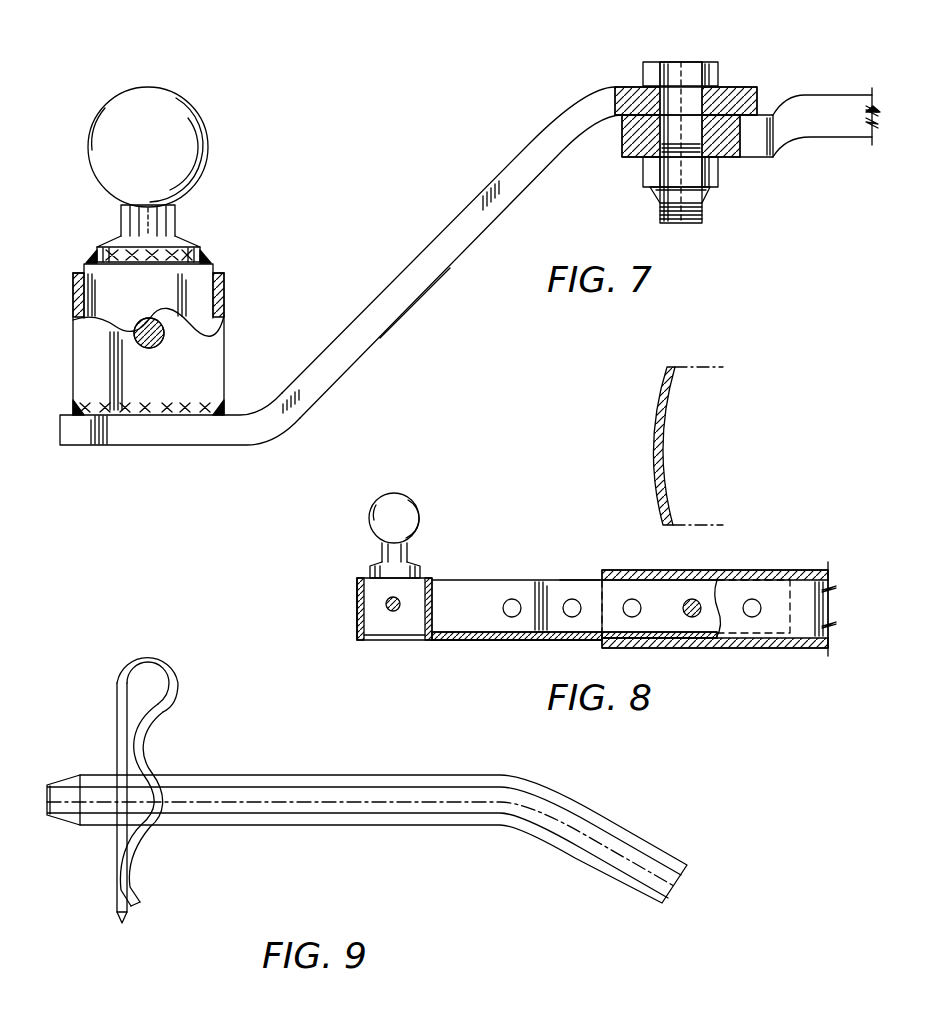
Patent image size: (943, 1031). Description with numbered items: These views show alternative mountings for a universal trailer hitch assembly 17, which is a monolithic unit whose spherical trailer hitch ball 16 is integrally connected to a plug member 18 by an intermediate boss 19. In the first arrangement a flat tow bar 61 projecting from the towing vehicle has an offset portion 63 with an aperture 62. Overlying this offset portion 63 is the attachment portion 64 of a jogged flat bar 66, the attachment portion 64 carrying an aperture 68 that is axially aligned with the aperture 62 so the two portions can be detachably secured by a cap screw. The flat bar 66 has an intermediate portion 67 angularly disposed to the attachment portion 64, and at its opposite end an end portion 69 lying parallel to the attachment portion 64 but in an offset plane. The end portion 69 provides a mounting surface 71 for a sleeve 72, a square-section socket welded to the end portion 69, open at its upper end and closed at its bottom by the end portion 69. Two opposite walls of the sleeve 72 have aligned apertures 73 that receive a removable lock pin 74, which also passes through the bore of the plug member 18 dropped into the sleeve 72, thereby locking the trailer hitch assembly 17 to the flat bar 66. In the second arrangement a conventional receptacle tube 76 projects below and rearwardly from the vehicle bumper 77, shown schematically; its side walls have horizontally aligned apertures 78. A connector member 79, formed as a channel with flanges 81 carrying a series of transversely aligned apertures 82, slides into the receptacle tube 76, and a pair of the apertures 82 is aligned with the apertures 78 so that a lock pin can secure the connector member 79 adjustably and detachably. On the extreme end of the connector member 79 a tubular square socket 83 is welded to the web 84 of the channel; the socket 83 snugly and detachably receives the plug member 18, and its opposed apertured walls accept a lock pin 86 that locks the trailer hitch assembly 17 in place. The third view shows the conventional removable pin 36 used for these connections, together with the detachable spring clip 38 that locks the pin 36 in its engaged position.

In FIG. 7, the trailer hitch ball 16 is at (190, 130).
In FIG. 8, the trailer hitch ball 16 is at (410, 510).
In FIG. 7, the trailer hitch assembly 17 is at (195, 220).
In FIG. 8, the trailer hitch assembly 17 is at (368, 556).
In FIG. 8, the plug member 18 is at (417, 587).
In FIG. 7, the intermediate boss 19 is at (122, 222).
In FIG. 9, the removable pin 36 is at (277, 777).
In FIG. 9, the spring clip 38 is at (115, 717).
In FIG. 7, the tow bar 61 is at (818, 107).
In FIG. 7, the aperture 62 is at (680, 157).
In FIG. 7, the offset portion 63 is at (640, 143).
In FIG. 7, the attachment portion 64 is at (630, 88).
In FIG. 7, the flat bar 66 is at (461, 200).
In FIG. 7, the intermediate portion 67 is at (441, 266).
In FIG. 7, the aperture 68 is at (690, 110).
In FIG. 7, the end portion 69 is at (184, 435).
In FIG. 7, the mounting surface 71 is at (252, 412).
In FIG. 7, the sleeve 72 is at (223, 297).
In FIG. 7, the apertures 73 is at (155, 347).
In FIG. 7, the lock pin 74 is at (150, 326).
In FIG. 8, the receptacle tube 76 is at (708, 575).
In FIG. 8, the bumper 77 is at (661, 490).
In FIG. 8, the apertures 78 is at (750, 603).
In FIG. 8, the connector member 79 is at (575, 576).
In FIG. 8, the flanges 81 is at (485, 583).
In FIG. 8, the apertures 82 is at (508, 606).
In FIG. 8, the socket 83 is at (355, 596).
In FIG. 8, the web 84 is at (467, 641).
In FIG. 8, the lock pin 86 is at (393, 612).